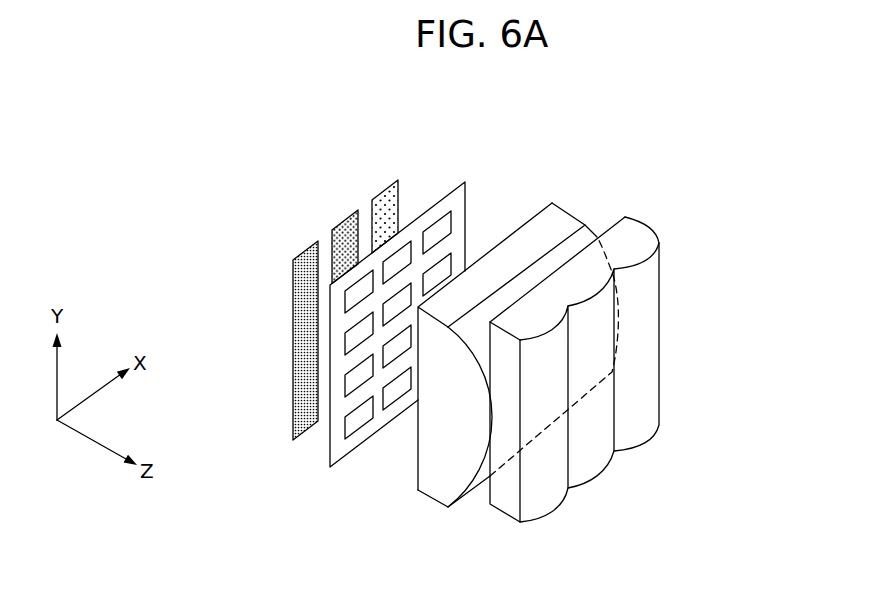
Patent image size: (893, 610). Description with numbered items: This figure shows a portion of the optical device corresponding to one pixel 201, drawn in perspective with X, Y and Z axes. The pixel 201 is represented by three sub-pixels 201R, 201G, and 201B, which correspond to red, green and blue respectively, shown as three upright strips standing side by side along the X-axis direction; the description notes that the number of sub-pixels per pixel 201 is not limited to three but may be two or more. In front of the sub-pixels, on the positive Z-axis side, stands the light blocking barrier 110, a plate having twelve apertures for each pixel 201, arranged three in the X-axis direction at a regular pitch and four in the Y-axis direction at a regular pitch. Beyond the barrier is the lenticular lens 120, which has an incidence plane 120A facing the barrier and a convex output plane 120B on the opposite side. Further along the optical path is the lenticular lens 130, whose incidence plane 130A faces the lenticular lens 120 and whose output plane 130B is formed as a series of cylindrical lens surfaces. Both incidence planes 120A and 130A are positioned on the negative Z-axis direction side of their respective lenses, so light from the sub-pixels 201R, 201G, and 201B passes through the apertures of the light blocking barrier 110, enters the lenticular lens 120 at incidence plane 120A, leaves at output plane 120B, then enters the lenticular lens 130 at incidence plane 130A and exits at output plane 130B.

The pixel 201 is at (348, 113).
The sub-pixel 201R is at (308, 247).
The sub-pixel 201G is at (344, 221).
The sub-pixel 201B is at (386, 189).
The light blocking barrier 110 is at (450, 193).
The lenticular lens 120 is at (556, 200).
The incidence plane 120A is at (517, 228).
The output plane 120B is at (477, 338).
The lenticular lens 130 is at (652, 228).
The incidence plane 130A is at (598, 238).
The output plane 130B is at (650, 334).